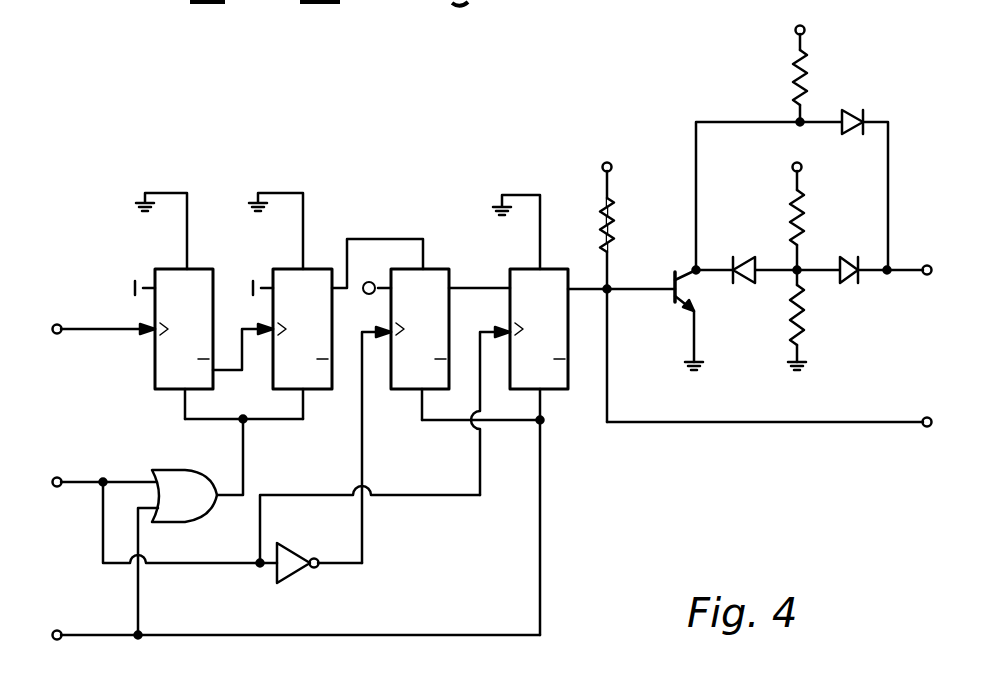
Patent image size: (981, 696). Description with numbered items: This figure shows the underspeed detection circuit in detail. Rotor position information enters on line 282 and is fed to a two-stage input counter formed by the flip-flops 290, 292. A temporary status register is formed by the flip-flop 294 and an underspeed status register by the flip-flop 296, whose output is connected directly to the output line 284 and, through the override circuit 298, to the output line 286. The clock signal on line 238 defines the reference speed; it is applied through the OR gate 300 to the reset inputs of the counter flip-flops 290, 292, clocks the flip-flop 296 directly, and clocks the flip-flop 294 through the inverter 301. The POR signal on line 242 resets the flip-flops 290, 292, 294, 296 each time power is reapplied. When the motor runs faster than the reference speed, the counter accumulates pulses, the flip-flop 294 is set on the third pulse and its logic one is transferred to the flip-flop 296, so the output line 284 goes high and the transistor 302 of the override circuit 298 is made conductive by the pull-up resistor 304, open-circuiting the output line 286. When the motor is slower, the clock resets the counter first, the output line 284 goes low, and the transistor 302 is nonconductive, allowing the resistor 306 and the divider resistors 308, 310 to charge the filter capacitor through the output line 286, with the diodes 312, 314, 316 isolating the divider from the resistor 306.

The line 238 is at (82, 486).
The line 242 is at (110, 637).
The line 282 is at (104, 329).
The output line 284 is at (785, 424).
The output line 286 is at (905, 273).
The flip-flop 290 is at (80, 326).
The flip-flop 292 is at (283, 363).
The flip-flop 294 is at (405, 393).
The flip-flop 296 is at (555, 393).
The override circuit 298 is at (700, 108).
The OR gate 300 is at (175, 488).
The inverter 301 is at (292, 572).
The transistor 302 is at (680, 298).
The pull-up resistor 304 is at (615, 225).
The resistor 306 is at (790, 75).
The divider resistor 308 is at (795, 205).
The divider resistor 310 is at (805, 335).
The diode 312 is at (748, 257).
The diode 314 is at (842, 257).
The diode 316 is at (845, 110).